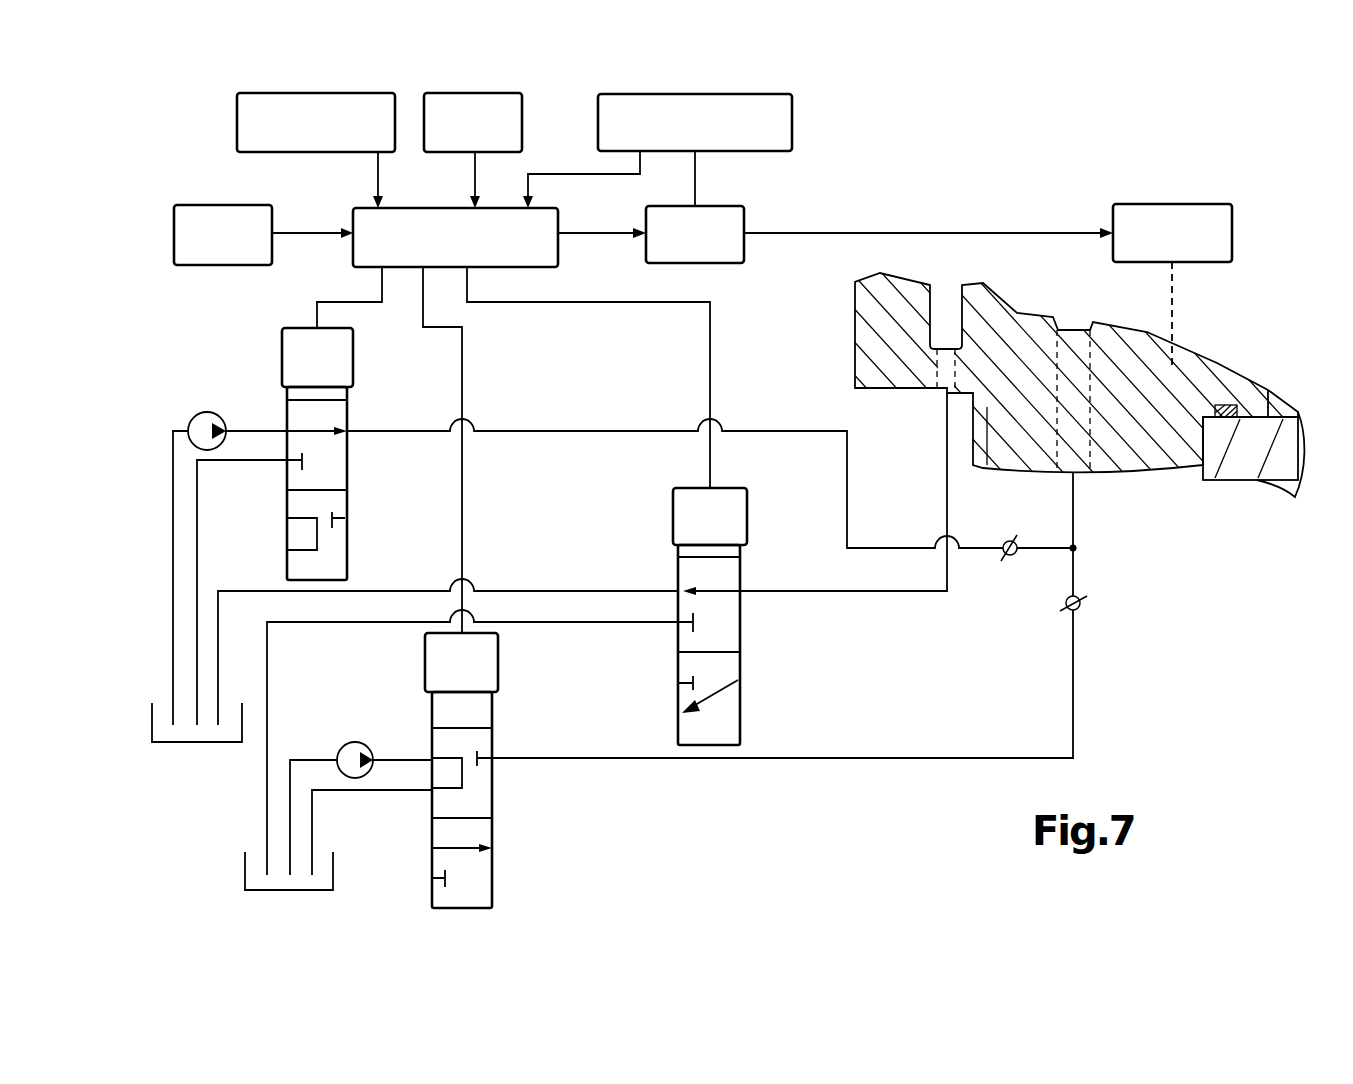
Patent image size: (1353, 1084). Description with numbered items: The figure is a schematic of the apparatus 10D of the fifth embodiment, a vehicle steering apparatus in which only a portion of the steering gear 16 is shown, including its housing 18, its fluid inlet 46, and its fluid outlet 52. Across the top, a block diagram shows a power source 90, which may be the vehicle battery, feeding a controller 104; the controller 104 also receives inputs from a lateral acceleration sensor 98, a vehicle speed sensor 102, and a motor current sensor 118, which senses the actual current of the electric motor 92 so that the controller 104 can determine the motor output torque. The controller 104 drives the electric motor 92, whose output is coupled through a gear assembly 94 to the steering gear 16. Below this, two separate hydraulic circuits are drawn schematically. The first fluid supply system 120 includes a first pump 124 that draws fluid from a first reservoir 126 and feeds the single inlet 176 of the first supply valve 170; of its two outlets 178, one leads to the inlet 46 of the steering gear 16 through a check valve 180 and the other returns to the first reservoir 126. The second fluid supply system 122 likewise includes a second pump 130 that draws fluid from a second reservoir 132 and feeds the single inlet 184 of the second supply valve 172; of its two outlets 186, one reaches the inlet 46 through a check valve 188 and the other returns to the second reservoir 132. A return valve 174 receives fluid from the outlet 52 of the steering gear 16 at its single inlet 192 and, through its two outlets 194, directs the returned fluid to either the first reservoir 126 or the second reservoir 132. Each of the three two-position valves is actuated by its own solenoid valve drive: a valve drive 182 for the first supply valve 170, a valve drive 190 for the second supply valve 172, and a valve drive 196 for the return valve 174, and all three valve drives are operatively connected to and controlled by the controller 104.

The apparatus 10D is at (889, 187).
The steering gear 16 is at (946, 409).
The housing 18 is at (1152, 431).
The inlet 46 is at (1077, 432).
The outlet 52 is at (950, 363).
The power source 90 is at (240, 265).
The electric motor 92 is at (723, 206).
The gear assembly 94 is at (1226, 218).
The lateral acceleration sensor 98 is at (325, 153).
The vehicle speed sensor 102 is at (440, 147).
The controller 104 is at (365, 258).
The motor current sensor 118 is at (781, 128).
The first fluid supply system 120 is at (584, 596).
The second fluid supply system 122 is at (658, 690).
The first pump 124 is at (205, 413).
The first reservoir 126 is at (152, 722).
The second pump 130 is at (345, 745).
The second reservoir 132 is at (245, 869).
The first supply valve 170 is at (323, 449).
The second supply valve 172 is at (473, 770).
The return valve 174 is at (726, 601).
The inlet 176 is at (287, 432).
The outlets 178 is at (348, 433).
The check valve 180 is at (1005, 558).
The valve drive 182 is at (282, 357).
The inlet 184 is at (432, 758).
The outlets 186 is at (430, 791).
The check valve 188 is at (1083, 606).
The valve drive 190 is at (498, 662).
The inlet 192 is at (741, 590).
The outlets 194 is at (678, 622).
The valve drive 196 is at (746, 495).